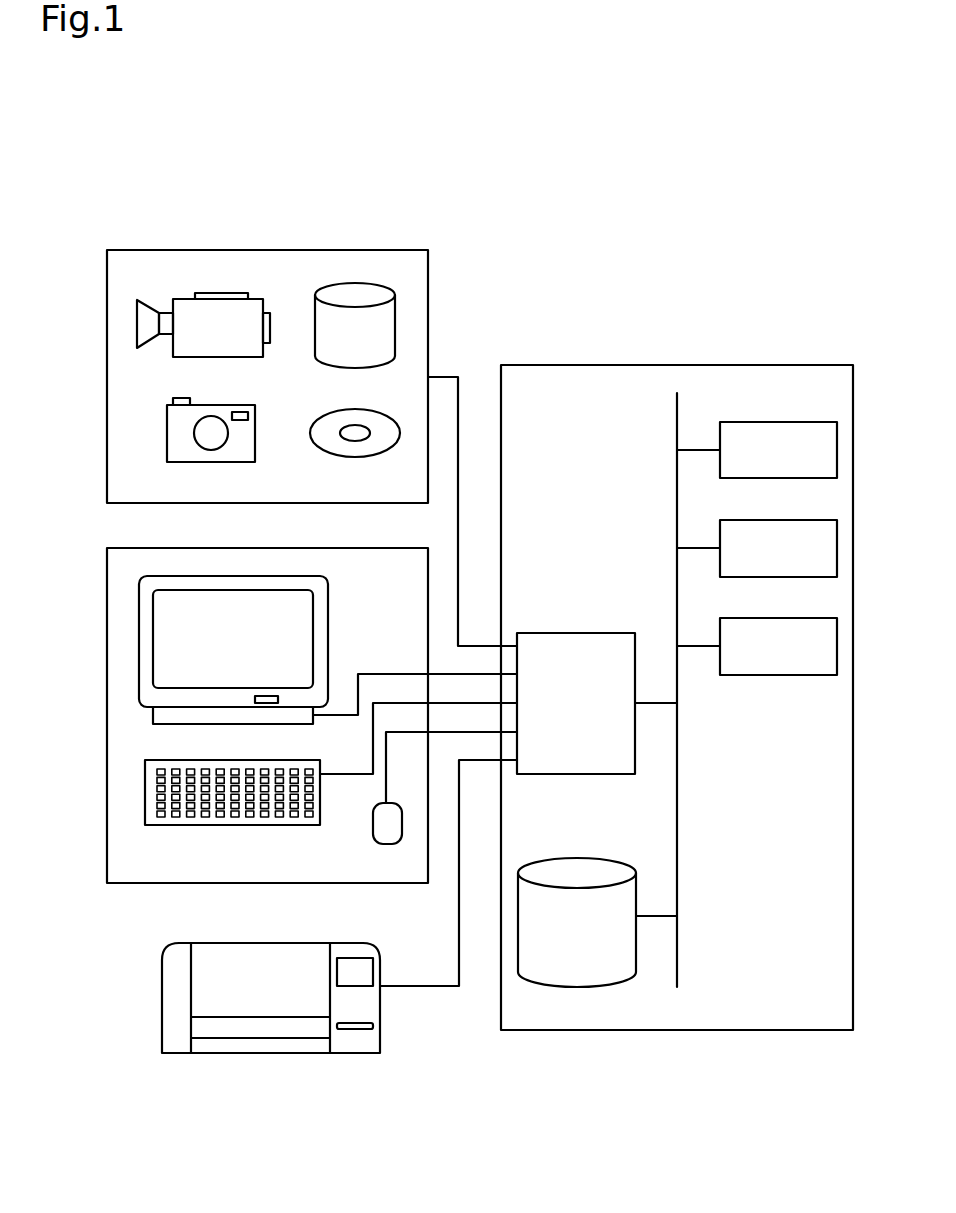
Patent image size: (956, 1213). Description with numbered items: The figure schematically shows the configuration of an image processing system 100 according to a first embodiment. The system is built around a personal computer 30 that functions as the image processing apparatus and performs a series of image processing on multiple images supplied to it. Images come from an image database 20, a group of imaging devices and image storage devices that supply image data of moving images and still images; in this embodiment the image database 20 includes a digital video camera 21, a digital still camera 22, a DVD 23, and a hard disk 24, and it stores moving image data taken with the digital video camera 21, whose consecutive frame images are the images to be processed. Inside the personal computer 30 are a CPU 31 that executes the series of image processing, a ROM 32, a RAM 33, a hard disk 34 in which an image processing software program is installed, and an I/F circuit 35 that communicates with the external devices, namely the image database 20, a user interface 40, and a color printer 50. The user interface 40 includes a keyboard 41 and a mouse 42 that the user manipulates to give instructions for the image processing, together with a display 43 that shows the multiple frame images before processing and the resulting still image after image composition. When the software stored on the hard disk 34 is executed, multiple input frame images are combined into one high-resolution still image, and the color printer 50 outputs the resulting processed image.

The image processing system 100 is at (170, 169).
The image database 20 is at (107, 345).
The digital video camera 21 is at (222, 293).
The digital still camera 22 is at (219, 462).
The DVD 23 is at (353, 458).
The hard disk 24 is at (360, 285).
The personal computer 30 is at (550, 365).
The CPU 31 is at (790, 422).
The ROM 32 is at (790, 520).
The RAM 33 is at (790, 618).
The hard disk 34 is at (586, 986).
The I/F circuit 35 is at (586, 633).
The user interface 40 is at (107, 620).
The keyboard 41 is at (282, 826).
The mouse 42 is at (385, 845).
The display 43 is at (330, 610).
The color printer 50 is at (162, 986).